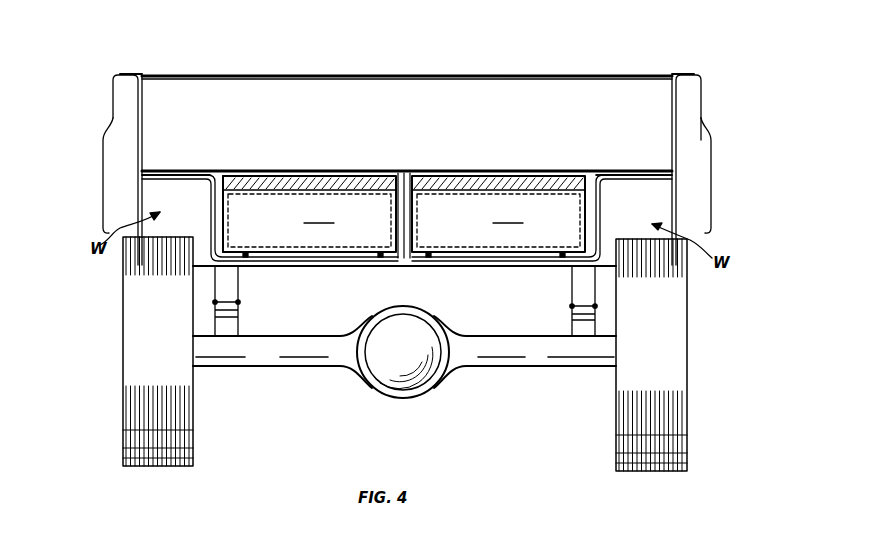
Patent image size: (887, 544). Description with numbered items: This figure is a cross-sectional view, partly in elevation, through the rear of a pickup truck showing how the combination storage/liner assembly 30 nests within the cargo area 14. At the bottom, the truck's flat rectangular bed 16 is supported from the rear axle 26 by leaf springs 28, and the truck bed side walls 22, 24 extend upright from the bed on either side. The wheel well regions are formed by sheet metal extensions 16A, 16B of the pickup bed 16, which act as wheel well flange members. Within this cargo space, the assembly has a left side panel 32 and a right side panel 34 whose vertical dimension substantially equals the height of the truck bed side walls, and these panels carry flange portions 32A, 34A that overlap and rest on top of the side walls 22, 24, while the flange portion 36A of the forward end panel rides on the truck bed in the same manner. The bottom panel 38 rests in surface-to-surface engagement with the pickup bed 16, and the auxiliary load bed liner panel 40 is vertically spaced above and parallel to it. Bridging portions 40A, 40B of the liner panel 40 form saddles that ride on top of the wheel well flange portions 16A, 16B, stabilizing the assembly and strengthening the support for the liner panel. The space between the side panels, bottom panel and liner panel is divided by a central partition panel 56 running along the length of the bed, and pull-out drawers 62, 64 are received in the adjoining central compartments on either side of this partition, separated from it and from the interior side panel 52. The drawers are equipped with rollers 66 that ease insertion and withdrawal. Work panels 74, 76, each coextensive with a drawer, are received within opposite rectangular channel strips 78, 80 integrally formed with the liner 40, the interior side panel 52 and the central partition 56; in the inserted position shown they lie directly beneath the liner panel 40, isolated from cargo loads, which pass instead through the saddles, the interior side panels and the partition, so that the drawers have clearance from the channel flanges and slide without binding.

The cargo area 14 is at (700, 62).
The bed 16 is at (500, 268).
The sheet metal extension 16A is at (212, 193).
The sheet metal extension 16B is at (598, 198).
The side wall 22 is at (113, 98).
The side wall 24 is at (712, 190).
The rear axle 26 is at (355, 395).
The leaf springs 28 is at (239, 284).
The combination storage/liner assembly 30 is at (352, 56).
The left side panel 32 is at (144, 118).
The flange portion 32A is at (139, 75).
The right side panel 34 is at (672, 118).
The flange portion 34A is at (701, 82).
The flange portion 36A is at (487, 76).
The bottom panel 38 is at (350, 268).
The auxiliary load bed liner panel 40 is at (312, 153).
The bridging portion 40A is at (178, 170).
The bridging portion 40B is at (632, 172).
The interior side panel 52 is at (224, 214).
The central partition panel 56 is at (413, 222).
The pull-out drawer 62 is at (309, 214).
The pull-out drawer 64 is at (498, 214).
The rollers 66 is at (246, 251).
The work panel 74 is at (347, 172).
The work panel 76 is at (512, 172).
The rectangular channel strip 78 is at (234, 177).
The rectangular channel strip 80 is at (394, 172).